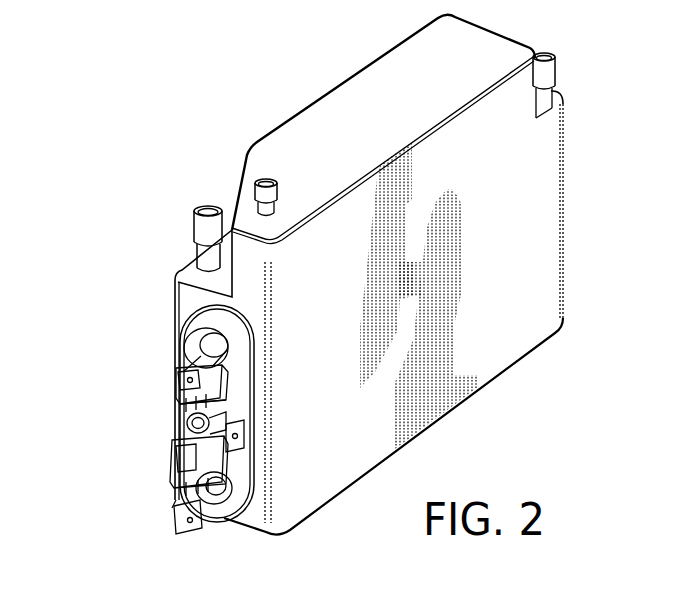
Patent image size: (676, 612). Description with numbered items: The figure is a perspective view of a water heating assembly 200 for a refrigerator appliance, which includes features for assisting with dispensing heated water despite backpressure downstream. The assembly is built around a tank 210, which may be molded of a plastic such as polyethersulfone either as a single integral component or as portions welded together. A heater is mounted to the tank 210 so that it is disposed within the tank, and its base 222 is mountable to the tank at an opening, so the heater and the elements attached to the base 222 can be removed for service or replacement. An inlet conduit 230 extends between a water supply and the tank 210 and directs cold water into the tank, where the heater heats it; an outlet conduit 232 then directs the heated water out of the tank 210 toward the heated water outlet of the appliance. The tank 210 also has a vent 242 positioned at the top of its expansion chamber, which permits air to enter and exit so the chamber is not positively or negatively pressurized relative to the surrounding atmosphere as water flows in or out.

The water heating assembly 200 is at (602, 130).
The tank 210 is at (563, 243).
The base 222 is at (177, 320).
The inlet conduit 230 is at (193, 221).
The outlet conduit 232 is at (530, 82).
The vent 242 is at (278, 196).